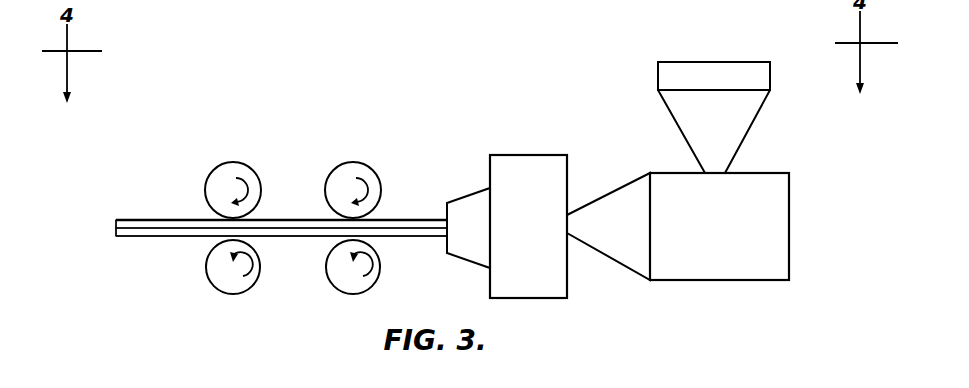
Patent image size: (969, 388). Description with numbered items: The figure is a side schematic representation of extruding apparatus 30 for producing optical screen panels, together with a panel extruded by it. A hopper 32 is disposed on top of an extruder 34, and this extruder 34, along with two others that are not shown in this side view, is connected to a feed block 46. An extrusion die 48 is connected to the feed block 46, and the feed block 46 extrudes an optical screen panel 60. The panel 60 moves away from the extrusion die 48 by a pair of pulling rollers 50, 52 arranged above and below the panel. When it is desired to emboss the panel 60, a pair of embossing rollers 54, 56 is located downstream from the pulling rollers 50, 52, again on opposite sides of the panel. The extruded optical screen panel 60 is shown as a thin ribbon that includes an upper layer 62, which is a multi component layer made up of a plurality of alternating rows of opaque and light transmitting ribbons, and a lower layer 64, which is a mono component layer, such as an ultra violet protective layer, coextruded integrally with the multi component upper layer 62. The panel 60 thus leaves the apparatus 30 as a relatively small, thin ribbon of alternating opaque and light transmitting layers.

The extruding apparatus 30 is at (366, 98).
The hopper 32 is at (755, 115).
The extruder 34 is at (790, 199).
The feed block 46 is at (533, 155).
The extrusion die 48 is at (467, 195).
The pulling roller 50 is at (345, 165).
The pulling roller 52 is at (343, 293).
The embossing roller 54 is at (232, 163).
The embossing roller 56 is at (222, 295).
The optical screen panel 60 is at (125, 210).
The upper layer 62 is at (165, 225).
The lower layer 64 is at (148, 238).